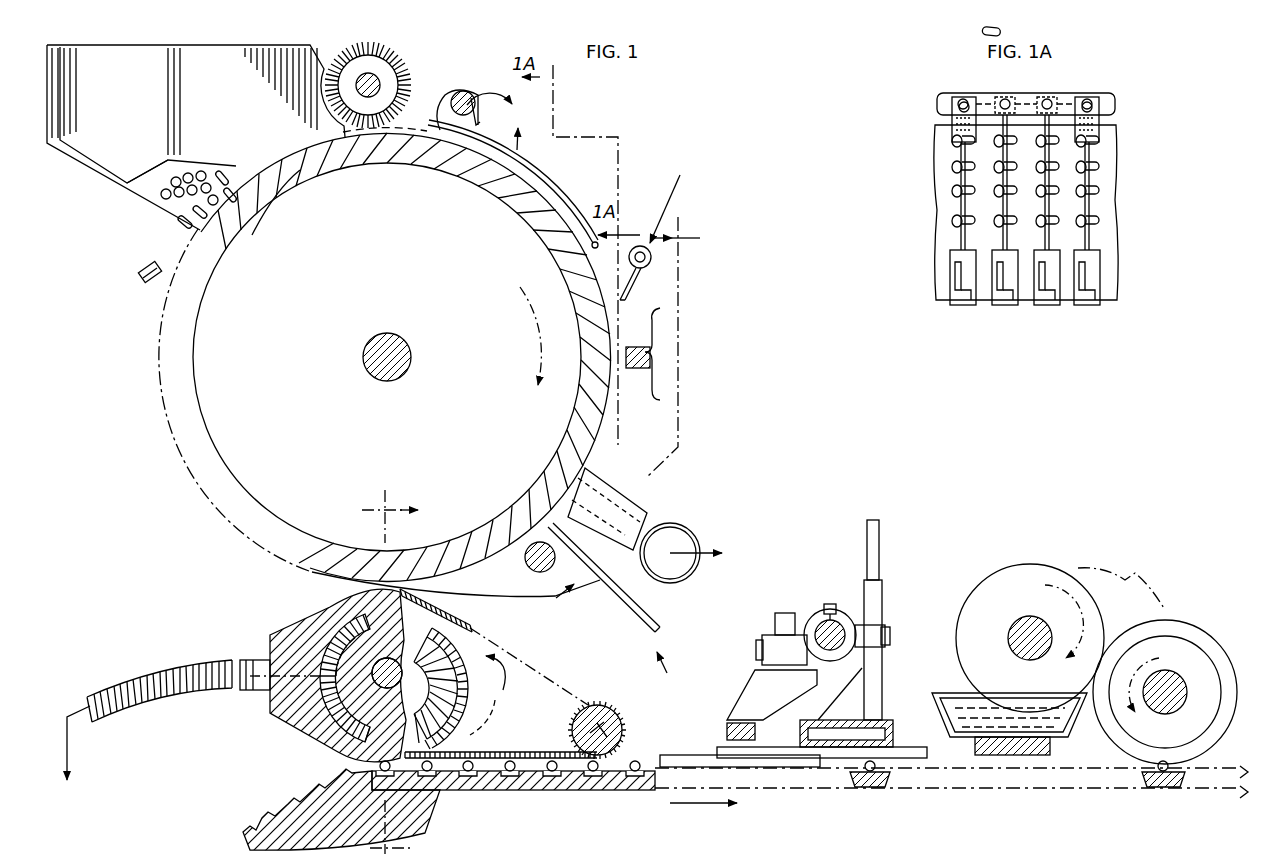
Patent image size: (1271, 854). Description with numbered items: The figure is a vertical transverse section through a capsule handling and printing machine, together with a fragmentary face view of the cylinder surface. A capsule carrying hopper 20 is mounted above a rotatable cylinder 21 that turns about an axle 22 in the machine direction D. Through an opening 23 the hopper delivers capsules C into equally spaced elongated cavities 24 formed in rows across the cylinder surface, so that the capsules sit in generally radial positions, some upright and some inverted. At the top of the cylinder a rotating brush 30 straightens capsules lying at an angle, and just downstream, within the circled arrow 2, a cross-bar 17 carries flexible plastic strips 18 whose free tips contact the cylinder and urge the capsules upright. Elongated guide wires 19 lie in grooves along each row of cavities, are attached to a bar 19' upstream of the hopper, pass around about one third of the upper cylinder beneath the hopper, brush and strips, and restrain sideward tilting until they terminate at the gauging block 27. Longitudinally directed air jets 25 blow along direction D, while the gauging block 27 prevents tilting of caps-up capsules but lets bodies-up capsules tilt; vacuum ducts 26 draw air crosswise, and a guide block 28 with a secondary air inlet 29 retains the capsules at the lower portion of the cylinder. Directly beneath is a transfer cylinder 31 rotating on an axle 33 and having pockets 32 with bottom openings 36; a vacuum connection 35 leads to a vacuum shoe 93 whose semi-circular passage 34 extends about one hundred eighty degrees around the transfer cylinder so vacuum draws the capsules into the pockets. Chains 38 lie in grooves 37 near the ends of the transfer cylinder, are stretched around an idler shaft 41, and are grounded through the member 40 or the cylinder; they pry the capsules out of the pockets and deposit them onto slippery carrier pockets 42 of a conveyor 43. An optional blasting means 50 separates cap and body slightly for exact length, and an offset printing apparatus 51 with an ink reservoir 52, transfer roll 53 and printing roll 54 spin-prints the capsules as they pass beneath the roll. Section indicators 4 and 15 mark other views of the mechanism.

In FIG. 1, the circled arrow 2 is at (493, 121).
In FIG. 1, the section line 4 is at (675, 346).
In FIG. 1, the section line 15 is at (393, 513).
In FIG. 1, the cross-bar 17 is at (462, 91).
In FIG. 1A, the cross-bar 17 is at (940, 95).
In FIG. 1, the flexible plastic strips 18 is at (440, 130).
In FIG. 1A, the flexible plastic strips 18 is at (952, 130).
In FIG. 1, the guide wires 19 is at (470, 184).
In FIG. 1A, the guide wires 19 is at (1025, 181).
In FIG. 1, the bar 19' is at (131, 281).
In FIG. 1, the capsule carrying hopper 20 is at (148, 101).
In FIG. 1, the rotatable cylinder 21 is at (160, 375).
In FIG. 1A, the rotatable cylinder 21 is at (940, 236).
In FIG. 1, the axle 22 is at (408, 351).
In FIG. 1, the opening 23 is at (182, 220).
In FIG. 1, the cavities 24 is at (258, 222).
In FIG. 1, the air jets 25 is at (652, 272).
In FIG. 1, the vacuum ducts 26 is at (633, 513).
In FIG. 1, the gauging block 27 is at (682, 343).
In FIG. 1, the guide block 28 is at (500, 570).
In FIG. 1, the air inlet 29 is at (591, 585).
In FIG. 1, the rotating brush 30 is at (383, 72).
In FIG. 1, the transfer cylinder 31 is at (352, 655).
In FIG. 1, the pockets 32 is at (495, 695).
In FIG. 1, the axle 33 is at (391, 681).
In FIG. 1, the vacuum shoe 34 is at (313, 730).
In FIG. 1, the vacuum connection 35 is at (190, 665).
In FIG. 1, the openings 36 is at (452, 672).
In FIG. 1, the grooves 37 is at (327, 620).
In FIG. 1, the chain 38 is at (537, 754).
In FIG. 1, the member 40 is at (624, 730).
In FIG. 1, the idler shaft 41 is at (600, 706).
In FIG. 1, the pockets 42 is at (505, 776).
In FIG. 1, the conveyor 43 is at (525, 790).
In FIG. 1, the blasting means 50 is at (840, 588).
In FIG. 1, the offset printing apparatus 51 is at (1143, 580).
In FIG. 1, the ink reservoir 52 is at (962, 700).
In FIG. 1, the transfer roll 53 is at (1002, 583).
In FIG. 1, the printing roll 54 is at (1213, 640).
In FIG. 1, the vacuum shoe 93 is at (280, 705).
In FIG. 1, the cap portion C is at (258, 166).
In FIG. 1, the machine direction D is at (530, 318).